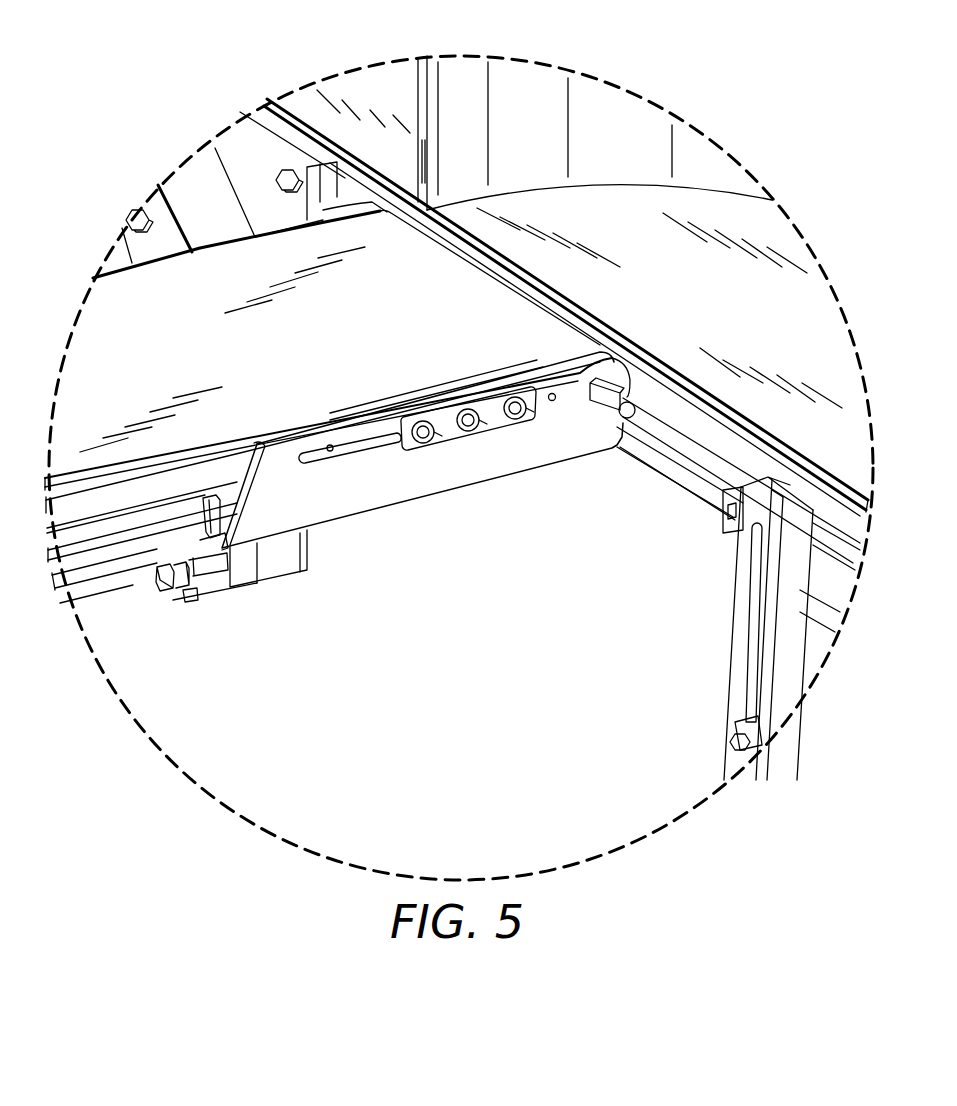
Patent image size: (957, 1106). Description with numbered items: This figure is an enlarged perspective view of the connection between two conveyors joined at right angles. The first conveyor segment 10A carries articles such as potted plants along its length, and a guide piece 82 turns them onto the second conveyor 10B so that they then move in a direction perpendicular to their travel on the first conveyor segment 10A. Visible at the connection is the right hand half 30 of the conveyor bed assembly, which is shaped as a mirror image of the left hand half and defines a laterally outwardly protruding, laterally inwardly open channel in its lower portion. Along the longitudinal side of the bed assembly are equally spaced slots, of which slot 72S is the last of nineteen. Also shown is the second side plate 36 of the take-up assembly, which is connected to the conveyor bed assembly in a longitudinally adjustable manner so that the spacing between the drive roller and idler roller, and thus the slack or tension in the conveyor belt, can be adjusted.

The guide piece 82 is at (515, 80).
The first conveyor segment 10A is at (710, 314).
The second conveyor 10B is at (372, 360).
The second side plate 36 is at (393, 480).
The slot 72S is at (217, 520).
The right hand half 30 is at (62, 515).